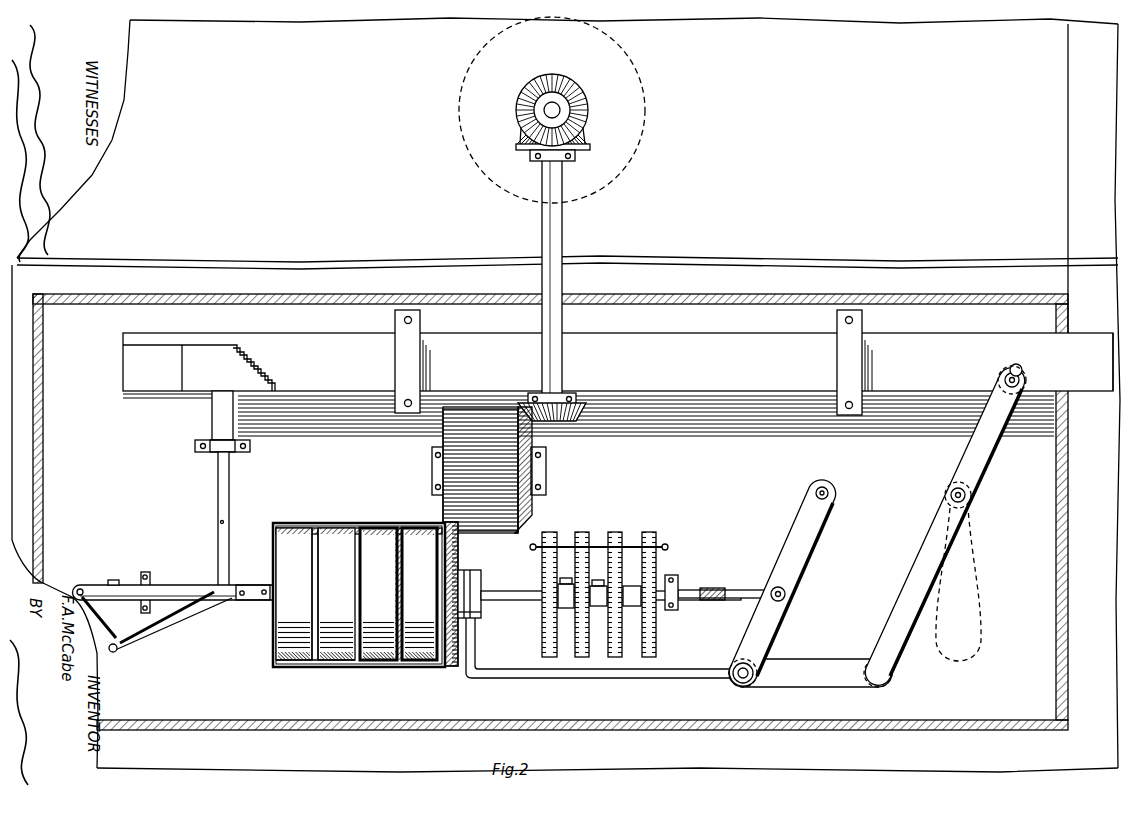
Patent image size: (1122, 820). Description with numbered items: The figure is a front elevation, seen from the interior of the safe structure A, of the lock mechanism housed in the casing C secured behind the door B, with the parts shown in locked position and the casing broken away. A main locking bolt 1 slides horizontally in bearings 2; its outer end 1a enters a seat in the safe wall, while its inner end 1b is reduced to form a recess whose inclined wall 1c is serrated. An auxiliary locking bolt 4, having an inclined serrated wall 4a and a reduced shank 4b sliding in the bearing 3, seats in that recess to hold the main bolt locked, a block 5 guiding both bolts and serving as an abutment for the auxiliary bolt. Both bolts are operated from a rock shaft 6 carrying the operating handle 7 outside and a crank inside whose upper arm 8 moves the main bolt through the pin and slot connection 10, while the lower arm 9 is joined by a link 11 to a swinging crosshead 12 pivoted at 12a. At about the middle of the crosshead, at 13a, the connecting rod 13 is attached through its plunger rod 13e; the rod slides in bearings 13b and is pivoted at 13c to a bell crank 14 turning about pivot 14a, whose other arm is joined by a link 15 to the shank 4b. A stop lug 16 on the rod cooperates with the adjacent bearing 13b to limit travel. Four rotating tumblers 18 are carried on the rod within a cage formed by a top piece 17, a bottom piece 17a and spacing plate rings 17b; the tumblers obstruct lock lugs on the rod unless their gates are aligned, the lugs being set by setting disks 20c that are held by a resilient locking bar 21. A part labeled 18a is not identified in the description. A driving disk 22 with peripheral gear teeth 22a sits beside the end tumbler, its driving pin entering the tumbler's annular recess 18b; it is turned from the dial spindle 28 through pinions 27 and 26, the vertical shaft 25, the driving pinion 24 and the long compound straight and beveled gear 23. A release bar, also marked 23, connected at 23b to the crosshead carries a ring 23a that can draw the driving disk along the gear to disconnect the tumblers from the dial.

The main locking bolt 1 is at (716, 350).
The outer end 1a is at (1106, 392).
The inner end 1b is at (163, 345).
The inclined wall 1c is at (262, 374).
The bearings 2 is at (420, 336).
The bearing 3 is at (228, 452).
The auxiliary locking bolt 4 is at (228, 392).
The inclined serrated wall 4a is at (240, 370).
The reduced shank 4b is at (212, 428).
The block 5 is at (123, 375).
The rock shaft 6 is at (966, 496).
The operating handle 7 is at (965, 584).
The upper arm 8 is at (984, 455).
The lower arm 9 is at (893, 618).
The pin and slot connection 10 is at (1019, 378).
The link 11 is at (840, 680).
The swinging crosshead 12 is at (808, 552).
The pivot 12a is at (828, 494).
The connecting rod 13 is at (230, 601).
The connection 13a is at (785, 594).
The bearings 13b is at (678, 580).
The pivotal connection 13c is at (716, 600).
The plunger rod 13e is at (756, 600).
The bell crank 14 is at (150, 628).
The pivot 14a is at (116, 654).
The link 15 is at (218, 521).
The stop lug 16 is at (113, 580).
The top piece 17 is at (298, 528).
The bottom piece 17a is at (300, 668).
The spacing plate rings 17b is at (356, 572).
The rotating tumblers 18 is at (418, 540).
The plate 18a is at (285, 553).
The annular recess 18b is at (370, 668).
The setting disk 20c is at (615, 532).
The resilient locking bar 21 is at (630, 546).
The driving disk 22 is at (462, 536).
The gear teeth 22a is at (468, 604).
The compound straight and beveled gear 23 is at (533, 516).
The ring 23a is at (480, 614).
The connection 23b is at (741, 684).
The driving pinion 24 is at (432, 467).
The vertical shaft 25 is at (562, 355).
The pinion 26 is at (584, 140).
The pinion 27 is at (585, 100).
The dial spindle 28 is at (552, 102).
The safe structure A is at (1088, 179).
The door B is at (283, 133).
The casing C is at (708, 296).